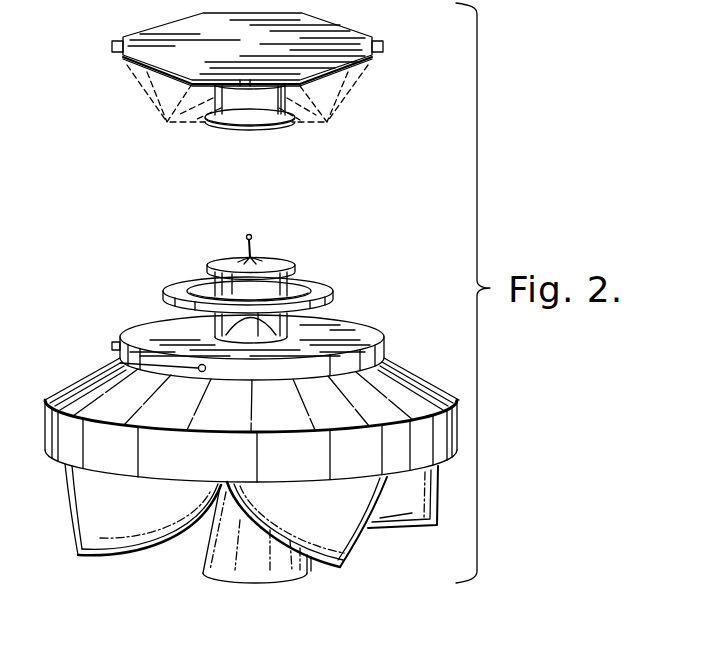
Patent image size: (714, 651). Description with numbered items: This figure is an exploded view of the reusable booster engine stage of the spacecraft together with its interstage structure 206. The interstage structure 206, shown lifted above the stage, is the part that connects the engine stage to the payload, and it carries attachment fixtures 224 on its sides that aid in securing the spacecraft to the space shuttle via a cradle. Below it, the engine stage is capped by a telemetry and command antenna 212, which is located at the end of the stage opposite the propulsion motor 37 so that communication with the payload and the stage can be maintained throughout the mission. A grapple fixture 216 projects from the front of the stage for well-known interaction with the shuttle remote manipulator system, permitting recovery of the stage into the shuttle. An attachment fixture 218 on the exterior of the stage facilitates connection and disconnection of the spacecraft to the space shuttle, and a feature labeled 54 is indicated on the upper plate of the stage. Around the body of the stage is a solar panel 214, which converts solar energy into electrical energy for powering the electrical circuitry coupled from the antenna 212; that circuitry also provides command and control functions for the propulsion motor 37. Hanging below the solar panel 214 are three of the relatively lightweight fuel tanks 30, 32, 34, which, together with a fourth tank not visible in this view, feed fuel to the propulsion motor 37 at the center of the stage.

The interstage structure 206 is at (383, 46).
The attachment fixtures 224 is at (112, 46).
The grapple fixture 216 is at (253, 235).
The telemetry and command antenna 212 is at (330, 292).
The plate 54 is at (296, 340).
The attachment fixtures 218 is at (112, 348).
The solar panel 214 is at (75, 455).
The tank 30 is at (148, 552).
The tank 32 is at (353, 556).
The tank 34 is at (437, 527).
The propulsion motor 37 is at (313, 574).